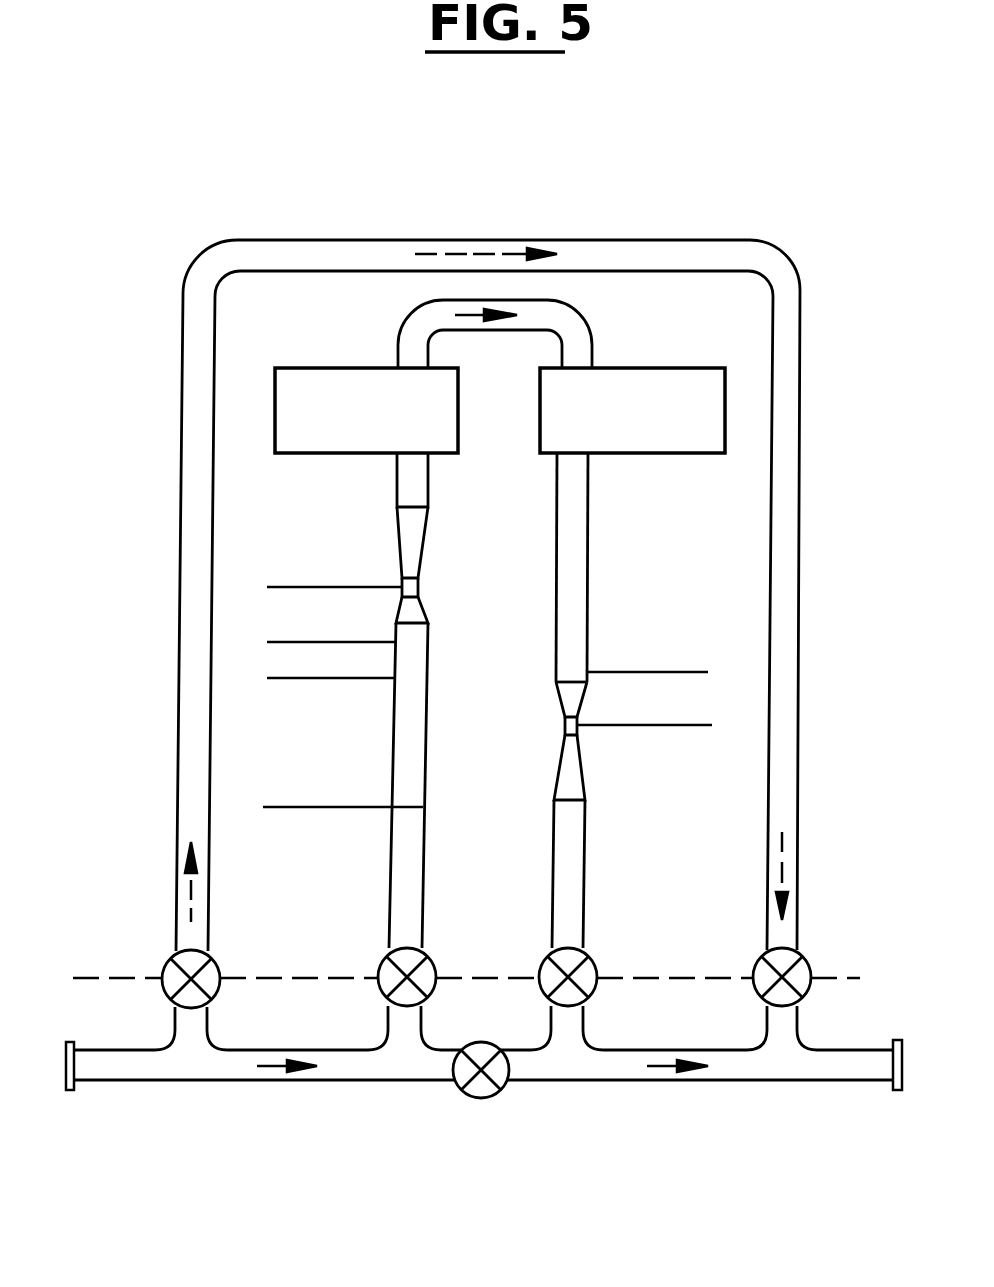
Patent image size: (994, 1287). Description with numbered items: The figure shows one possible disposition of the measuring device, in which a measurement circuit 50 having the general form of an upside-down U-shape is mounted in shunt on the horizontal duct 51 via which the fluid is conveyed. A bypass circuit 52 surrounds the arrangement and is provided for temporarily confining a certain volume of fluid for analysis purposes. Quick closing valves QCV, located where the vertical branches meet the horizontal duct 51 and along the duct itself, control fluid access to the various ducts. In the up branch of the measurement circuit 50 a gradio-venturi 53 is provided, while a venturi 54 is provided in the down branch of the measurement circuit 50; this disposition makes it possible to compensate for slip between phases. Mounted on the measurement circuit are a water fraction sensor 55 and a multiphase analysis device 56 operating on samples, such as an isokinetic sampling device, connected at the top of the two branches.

The measurement circuit 50 is at (379, 700).
The horizontal duct 51 is at (135, 1070).
The bypass circuit 52 is at (178, 610).
The gradio-venturi 53 is at (437, 803).
The venturi 54 is at (540, 675).
The water fraction sensor 55 is at (365, 367).
The multiphase analysis device 56 is at (657, 365).
The quick closing valves QCV is at (380, 970).